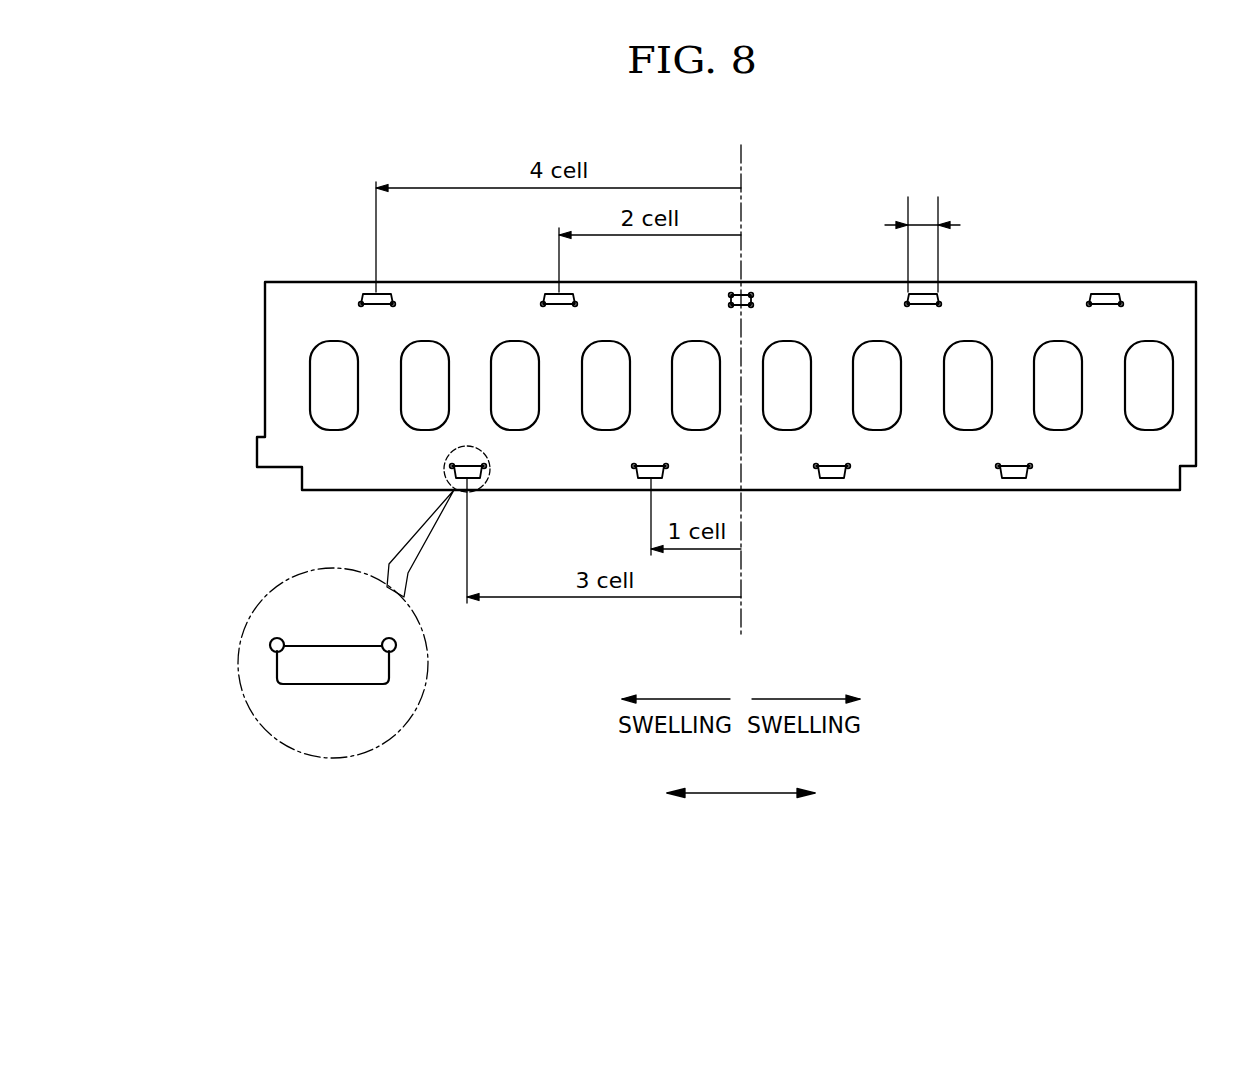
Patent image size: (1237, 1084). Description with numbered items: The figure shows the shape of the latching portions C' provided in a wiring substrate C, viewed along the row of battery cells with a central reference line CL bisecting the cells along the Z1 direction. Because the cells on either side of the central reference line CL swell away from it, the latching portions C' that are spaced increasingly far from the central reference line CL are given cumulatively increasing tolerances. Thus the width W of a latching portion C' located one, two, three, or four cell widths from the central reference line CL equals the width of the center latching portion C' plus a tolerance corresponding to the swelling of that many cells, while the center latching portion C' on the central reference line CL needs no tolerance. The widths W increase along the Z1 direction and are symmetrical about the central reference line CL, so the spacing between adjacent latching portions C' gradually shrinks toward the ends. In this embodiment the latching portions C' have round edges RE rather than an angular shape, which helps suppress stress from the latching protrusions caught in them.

The wiring substrate C is at (726, 342).
The latching portion C' is at (635, 630).
The round edges RE is at (270, 640).
The width of latching portion W is at (922, 242).
The central reference line CL is at (742, 409).
The Z1 direction Z1 is at (741, 810).